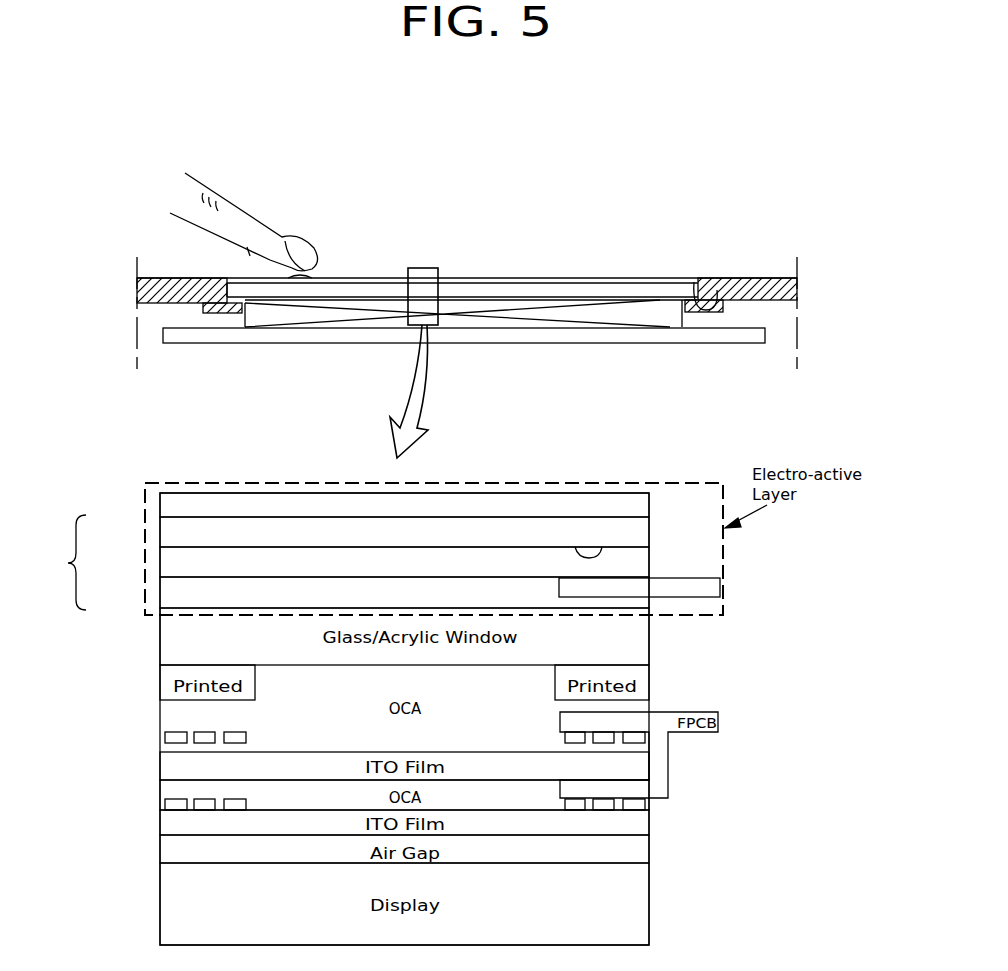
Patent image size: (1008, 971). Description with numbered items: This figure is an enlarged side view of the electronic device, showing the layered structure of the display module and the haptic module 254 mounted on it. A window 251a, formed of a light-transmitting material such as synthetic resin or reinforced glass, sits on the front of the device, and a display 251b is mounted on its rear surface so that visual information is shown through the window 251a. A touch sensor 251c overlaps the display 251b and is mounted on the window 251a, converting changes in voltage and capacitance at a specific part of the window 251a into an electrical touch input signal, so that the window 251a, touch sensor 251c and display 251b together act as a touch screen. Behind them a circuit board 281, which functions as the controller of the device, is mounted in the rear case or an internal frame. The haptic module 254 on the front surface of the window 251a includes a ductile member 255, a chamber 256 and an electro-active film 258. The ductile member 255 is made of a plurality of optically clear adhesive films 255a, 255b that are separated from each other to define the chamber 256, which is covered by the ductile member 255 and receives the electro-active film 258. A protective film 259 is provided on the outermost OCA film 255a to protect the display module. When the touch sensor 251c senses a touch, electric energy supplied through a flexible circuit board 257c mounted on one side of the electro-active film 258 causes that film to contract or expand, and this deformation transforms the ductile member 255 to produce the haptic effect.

The window 251a is at (678, 288).
The display 251b is at (513, 313).
The touch sensor 251c is at (715, 300).
The haptic module 254 is at (563, 278).
The ductile member 255 is at (61, 562).
The optically clear adhesive film 255a is at (168, 532).
The optically clear adhesive film 255b is at (168, 598).
The chamber 256 is at (603, 543).
The flexible circuit board 257c is at (717, 586).
The electro-active film 258 is at (634, 565).
The film 259 is at (170, 501).
The circuit board 281 is at (193, 332).